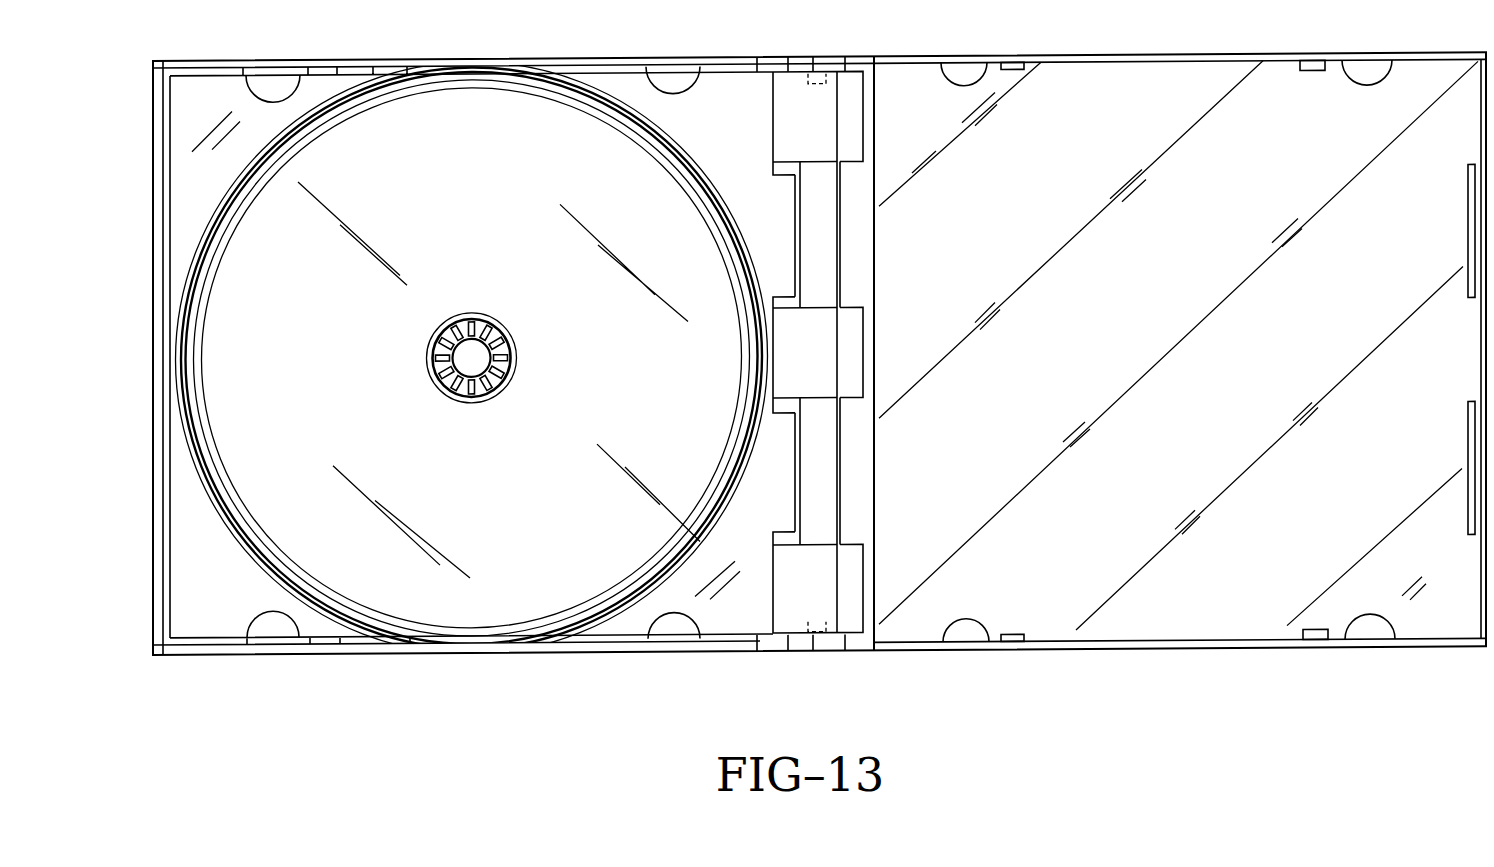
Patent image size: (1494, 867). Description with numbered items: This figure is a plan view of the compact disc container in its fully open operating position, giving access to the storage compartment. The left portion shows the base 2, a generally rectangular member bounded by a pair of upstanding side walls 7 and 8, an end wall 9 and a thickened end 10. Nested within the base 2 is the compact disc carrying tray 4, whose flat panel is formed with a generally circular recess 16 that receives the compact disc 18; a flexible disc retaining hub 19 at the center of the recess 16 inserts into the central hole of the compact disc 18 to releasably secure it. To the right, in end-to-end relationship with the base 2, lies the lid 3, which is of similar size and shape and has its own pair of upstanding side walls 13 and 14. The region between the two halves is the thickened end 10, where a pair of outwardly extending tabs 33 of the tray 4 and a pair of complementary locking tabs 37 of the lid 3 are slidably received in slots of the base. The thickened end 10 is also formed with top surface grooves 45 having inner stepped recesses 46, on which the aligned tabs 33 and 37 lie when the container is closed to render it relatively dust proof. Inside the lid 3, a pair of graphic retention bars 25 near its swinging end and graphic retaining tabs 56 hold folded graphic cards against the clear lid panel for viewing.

The base 2 is at (150, 522).
The lid 3 is at (1249, 614).
The compact disc carrying tray 4 is at (221, 608).
The side wall 7 is at (386, 60).
The side wall 8 is at (323, 656).
The end wall 9 is at (152, 196).
The thickened end 10 is at (768, 600).
The side wall 13 is at (1226, 60).
The side wall 14 is at (1172, 652).
The circular recess 16 is at (582, 612).
The compact disc 18 is at (472, 358).
The flexible disc retaining hub 19 is at (488, 340).
The graphic retention bars 25 is at (1468, 225).
The tabs 33 is at (786, 240).
The locking tabs 37 is at (860, 275).
The top surface grooves 45 is at (824, 482).
The inner stepped recesses 46 is at (782, 176).
The graphic retaining tabs 56 is at (1363, 76).